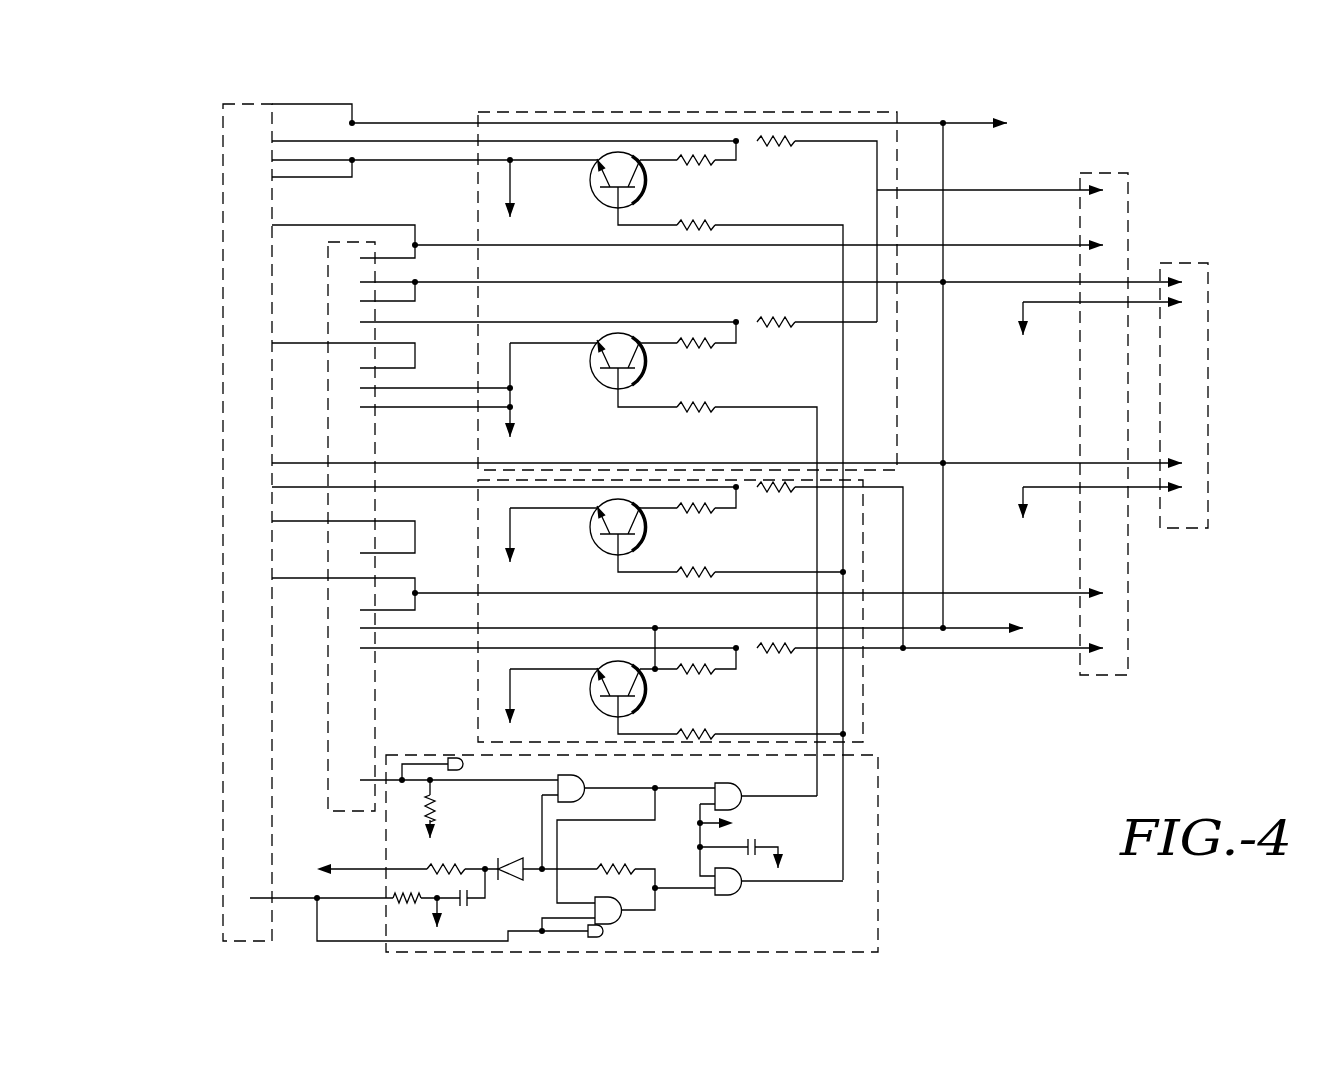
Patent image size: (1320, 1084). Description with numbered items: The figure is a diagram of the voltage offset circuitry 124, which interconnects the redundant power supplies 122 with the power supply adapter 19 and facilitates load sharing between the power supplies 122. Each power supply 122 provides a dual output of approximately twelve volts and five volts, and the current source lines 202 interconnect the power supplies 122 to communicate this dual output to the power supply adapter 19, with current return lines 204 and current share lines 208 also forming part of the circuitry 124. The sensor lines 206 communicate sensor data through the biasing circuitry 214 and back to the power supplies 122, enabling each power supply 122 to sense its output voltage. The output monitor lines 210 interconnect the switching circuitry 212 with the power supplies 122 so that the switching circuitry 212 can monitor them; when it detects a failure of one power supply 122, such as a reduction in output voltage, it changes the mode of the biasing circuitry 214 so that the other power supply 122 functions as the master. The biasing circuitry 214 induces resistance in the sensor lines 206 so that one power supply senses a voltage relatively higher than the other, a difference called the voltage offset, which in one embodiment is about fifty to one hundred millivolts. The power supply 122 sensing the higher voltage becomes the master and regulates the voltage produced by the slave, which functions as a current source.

The power supply adapter 19 is at (1208, 367).
The redundant power supplies 122 is at (223, 203).
The voltage offset circuitry 124 is at (1160, 133).
The current source lines 202 is at (272, 104).
The current return lines 204 is at (272, 160).
The sensor lines 206 is at (272, 225).
The current share lines 208 is at (272, 343).
The output monitor lines 210 is at (352, 780).
The switching circuitry 212 is at (878, 858).
The biasing circuitry 214 is at (897, 432).